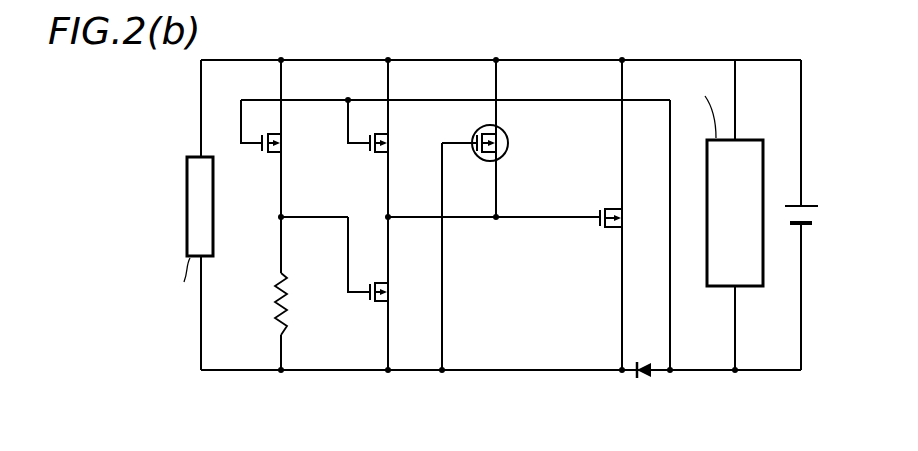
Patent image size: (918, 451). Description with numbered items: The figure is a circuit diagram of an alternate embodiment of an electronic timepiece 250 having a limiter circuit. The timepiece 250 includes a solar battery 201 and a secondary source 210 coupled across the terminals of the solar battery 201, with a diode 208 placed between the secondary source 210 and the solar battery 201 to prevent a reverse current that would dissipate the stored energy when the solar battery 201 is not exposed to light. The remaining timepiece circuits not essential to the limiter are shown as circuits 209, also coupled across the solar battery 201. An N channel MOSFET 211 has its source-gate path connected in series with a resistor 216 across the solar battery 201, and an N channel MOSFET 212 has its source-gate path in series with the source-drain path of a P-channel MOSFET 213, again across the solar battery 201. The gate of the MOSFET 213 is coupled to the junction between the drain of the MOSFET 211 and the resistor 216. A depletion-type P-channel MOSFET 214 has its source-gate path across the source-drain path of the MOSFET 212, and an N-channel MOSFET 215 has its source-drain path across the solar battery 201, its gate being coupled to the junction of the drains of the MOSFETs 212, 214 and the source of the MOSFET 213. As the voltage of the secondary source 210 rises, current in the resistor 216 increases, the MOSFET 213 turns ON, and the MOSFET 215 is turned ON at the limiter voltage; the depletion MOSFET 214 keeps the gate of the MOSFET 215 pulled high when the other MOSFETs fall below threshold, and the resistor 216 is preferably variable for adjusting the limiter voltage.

The solar battery 201 is at (211, 218).
The diode 208 is at (641, 376).
The circuits 209 is at (746, 224).
The secondary source 210 is at (806, 215).
The N channel MOSFET 211 is at (263, 156).
The N channel MOSFET 212 is at (371, 156).
The P-channel MOSFET 213 is at (372, 305).
The depletion-type P-channel MOSFET 214 is at (490, 162).
The N-channel MOSFET 215 is at (601, 232).
The resistor 216 is at (280, 320).
The electronic timepiece 250 is at (355, 395).